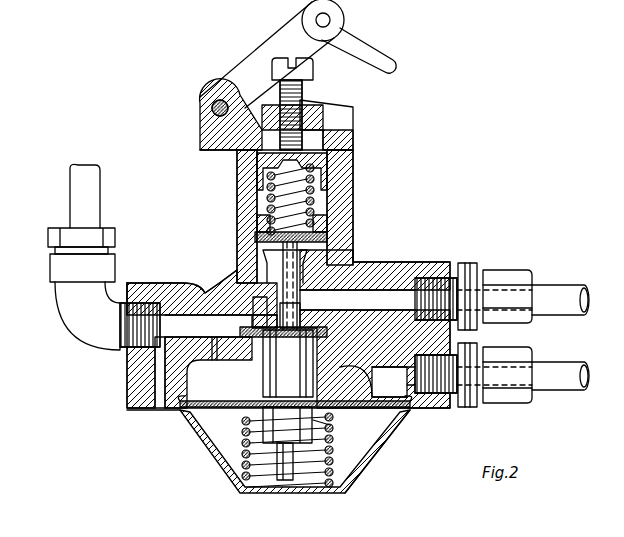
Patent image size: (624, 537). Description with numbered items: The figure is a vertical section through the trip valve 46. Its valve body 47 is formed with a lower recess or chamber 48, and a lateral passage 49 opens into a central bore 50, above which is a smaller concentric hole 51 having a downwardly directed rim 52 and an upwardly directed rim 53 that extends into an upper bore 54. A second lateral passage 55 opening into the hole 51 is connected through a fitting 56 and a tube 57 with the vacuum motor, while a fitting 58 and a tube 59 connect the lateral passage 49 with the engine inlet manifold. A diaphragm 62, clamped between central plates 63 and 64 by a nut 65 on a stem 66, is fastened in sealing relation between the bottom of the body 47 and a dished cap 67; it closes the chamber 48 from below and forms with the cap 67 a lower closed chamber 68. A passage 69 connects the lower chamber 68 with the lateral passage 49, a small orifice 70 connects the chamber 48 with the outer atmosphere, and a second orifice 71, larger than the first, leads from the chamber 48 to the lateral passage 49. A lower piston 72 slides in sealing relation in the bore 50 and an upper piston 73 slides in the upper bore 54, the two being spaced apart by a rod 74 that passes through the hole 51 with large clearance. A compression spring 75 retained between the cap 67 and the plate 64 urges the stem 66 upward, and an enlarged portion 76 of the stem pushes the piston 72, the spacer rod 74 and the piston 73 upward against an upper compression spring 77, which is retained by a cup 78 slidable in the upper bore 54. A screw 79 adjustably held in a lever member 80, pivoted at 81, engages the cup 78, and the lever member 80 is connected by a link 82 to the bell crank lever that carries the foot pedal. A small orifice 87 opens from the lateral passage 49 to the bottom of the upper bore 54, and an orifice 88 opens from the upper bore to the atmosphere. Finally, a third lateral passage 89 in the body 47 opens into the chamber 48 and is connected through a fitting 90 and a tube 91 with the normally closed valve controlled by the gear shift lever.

The trip valve 46 is at (412, 250).
The valve body 47 is at (232, 280).
The lower recess or chamber 48 is at (412, 410).
The lateral passage 49 is at (190, 300).
The central bore 50 is at (380, 300).
The concentric hole 51 is at (327, 237).
The downwardly directed rim 52 is at (235, 292).
The upwardly directed rim 53 is at (330, 200).
The upper bore 54 is at (372, 160).
The second lateral passage 55 is at (420, 263).
The fitting 56 is at (518, 280).
The tube 57 is at (556, 282).
The fitting 58 is at (90, 330).
The tube 59 is at (75, 203).
The diaphragm 62 is at (212, 415).
The central plate 63 is at (246, 398).
The central plate 64 is at (262, 420).
The nut 65 is at (265, 432).
The stem 66 is at (320, 428).
The dished cap 67 is at (340, 490).
The lower closed chamber 68 is at (395, 448).
The passage 69 is at (158, 380).
The small orifice 70 is at (190, 373).
The second orifice 71 is at (208, 326).
The lower piston 72 is at (372, 378).
The upper piston 73 is at (248, 215).
The rod 74 is at (354, 266).
The compression spring 75 is at (246, 465).
The enlarged portion 76 is at (280, 382).
The upper compression spring 77 is at (352, 128).
The cup 78 is at (230, 140).
The screw 79 is at (305, 93).
The lever member 80 is at (320, 107).
The pivot 81 is at (205, 100).
The link 82 is at (360, 40).
The small orifice 87 is at (233, 276).
The orifice 88 is at (240, 255).
The third lateral passage 89 is at (440, 408).
The fitting 90 is at (525, 398).
The tube 91 is at (573, 384).